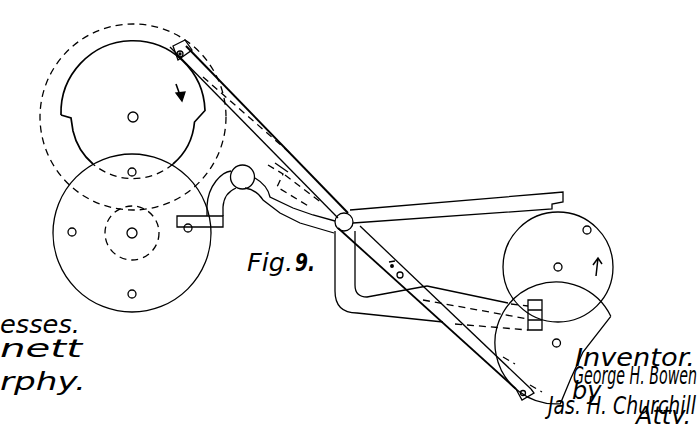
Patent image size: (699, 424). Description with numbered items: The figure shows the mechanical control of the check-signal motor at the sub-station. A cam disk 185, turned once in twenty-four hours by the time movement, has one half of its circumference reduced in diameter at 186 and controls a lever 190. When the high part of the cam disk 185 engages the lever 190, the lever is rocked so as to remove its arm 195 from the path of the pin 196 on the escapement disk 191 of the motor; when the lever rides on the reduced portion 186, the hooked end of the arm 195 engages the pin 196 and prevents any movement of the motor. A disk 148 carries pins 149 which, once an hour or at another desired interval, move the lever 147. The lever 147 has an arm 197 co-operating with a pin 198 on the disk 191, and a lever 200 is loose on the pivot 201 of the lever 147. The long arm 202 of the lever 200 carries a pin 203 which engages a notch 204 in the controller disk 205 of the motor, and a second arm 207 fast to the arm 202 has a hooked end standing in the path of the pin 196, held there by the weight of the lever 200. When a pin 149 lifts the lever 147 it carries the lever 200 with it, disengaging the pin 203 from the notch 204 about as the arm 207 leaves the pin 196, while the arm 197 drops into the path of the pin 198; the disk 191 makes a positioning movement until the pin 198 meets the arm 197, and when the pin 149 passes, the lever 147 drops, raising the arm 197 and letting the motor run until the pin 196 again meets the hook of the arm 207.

The cam disk 185 is at (87, 62).
The reduced portion 186 is at (69, 119).
The disk 148 is at (193, 273).
The pin 149 is at (79, 224).
The lever 147 is at (223, 208).
The lever 200 is at (307, 193).
The pivot 201 is at (351, 212).
The lever 190 is at (257, 97).
The long arm 202 is at (463, 339).
The pin 203 is at (522, 382).
The notch 204 is at (521, 384).
The arm 195 is at (363, 315).
The second arm 207 is at (452, 294).
The pin 196 is at (531, 300).
The arm 197 is at (468, 195).
The escapement disk 191 is at (612, 241).
The pin 198 is at (589, 226).
The disk 205 is at (606, 308).